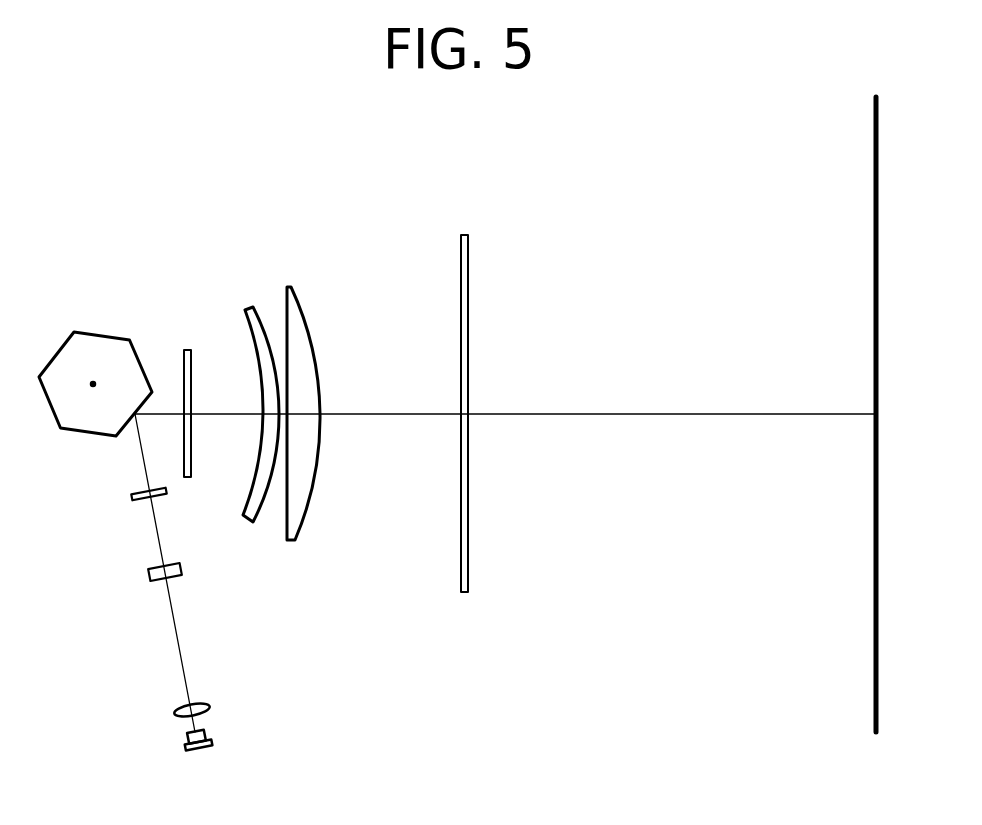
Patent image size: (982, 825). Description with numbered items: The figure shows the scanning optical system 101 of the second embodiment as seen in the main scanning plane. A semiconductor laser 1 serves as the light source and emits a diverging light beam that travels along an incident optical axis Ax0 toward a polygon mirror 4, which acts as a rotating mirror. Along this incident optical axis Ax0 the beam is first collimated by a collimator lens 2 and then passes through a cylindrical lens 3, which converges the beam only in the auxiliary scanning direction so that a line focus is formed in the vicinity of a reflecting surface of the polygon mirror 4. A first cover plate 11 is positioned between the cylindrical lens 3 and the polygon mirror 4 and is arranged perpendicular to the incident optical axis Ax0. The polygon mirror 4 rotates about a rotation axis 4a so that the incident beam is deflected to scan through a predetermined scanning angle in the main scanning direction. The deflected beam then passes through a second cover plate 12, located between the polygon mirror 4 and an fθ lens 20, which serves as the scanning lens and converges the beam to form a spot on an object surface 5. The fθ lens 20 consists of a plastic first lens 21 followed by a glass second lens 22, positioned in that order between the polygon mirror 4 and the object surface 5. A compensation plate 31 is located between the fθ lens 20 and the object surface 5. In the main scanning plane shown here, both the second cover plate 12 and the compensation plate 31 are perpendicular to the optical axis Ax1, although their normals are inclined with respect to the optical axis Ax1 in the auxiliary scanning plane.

The semiconductor laser 1 is at (210, 735).
The collimator lens 2 is at (205, 703).
The cylindrical lens 3 is at (148, 570).
The first cover plate 11 is at (133, 494).
The polygon mirror 4 is at (90, 435).
The rotation axis 4a is at (93, 383).
The second cover plate 12 is at (192, 468).
The fθ lens 20 is at (272, 230).
The first lens 21 is at (249, 309).
The second lens 22 is at (289, 287).
The compensation plate 31 is at (469, 578).
The object surface 5 is at (873, 607).
The scanning optical system 101 is at (562, 174).
The incident optical axis Ax0 is at (178, 642).
The optical axis Ax1 is at (687, 417).